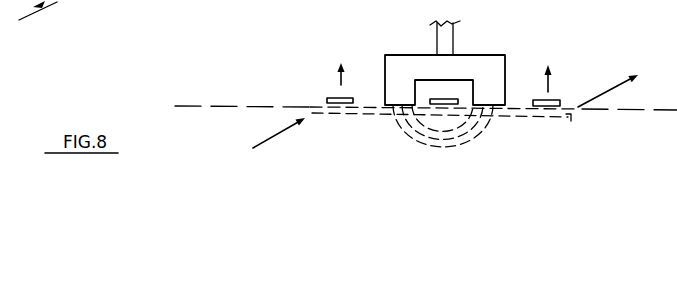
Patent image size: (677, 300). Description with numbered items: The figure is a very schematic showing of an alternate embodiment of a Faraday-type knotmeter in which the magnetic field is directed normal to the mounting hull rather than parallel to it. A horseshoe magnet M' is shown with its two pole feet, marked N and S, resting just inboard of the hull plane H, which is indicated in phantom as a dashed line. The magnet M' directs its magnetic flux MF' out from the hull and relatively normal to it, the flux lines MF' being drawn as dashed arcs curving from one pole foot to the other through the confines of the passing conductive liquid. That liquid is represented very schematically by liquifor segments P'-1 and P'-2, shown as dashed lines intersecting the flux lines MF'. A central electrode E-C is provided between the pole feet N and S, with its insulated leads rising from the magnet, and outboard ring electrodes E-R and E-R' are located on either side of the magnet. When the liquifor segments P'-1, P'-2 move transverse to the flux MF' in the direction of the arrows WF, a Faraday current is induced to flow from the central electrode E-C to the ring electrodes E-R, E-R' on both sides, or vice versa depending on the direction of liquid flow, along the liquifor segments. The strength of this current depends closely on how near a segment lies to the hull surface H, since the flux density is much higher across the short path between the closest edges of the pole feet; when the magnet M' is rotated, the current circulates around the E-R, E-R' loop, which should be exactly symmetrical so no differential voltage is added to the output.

The mounting hull plane H is at (412, 106).
The direction of liquid flow WF is at (278, 129).
The horseshoe magnet M' is at (445, 59).
The north pole of magnet N is at (398, 92).
The south pole of magnet S is at (486, 92).
The central electrode E-C is at (447, 99).
The magnetic flux MF' is at (453, 139).
The ring electrode E-R' is at (318, 81).
The outboard ring electrode E-R is at (563, 84).
The liquifor segment P'-2 is at (369, 131).
The liquifor segment P'-1 is at (529, 127).